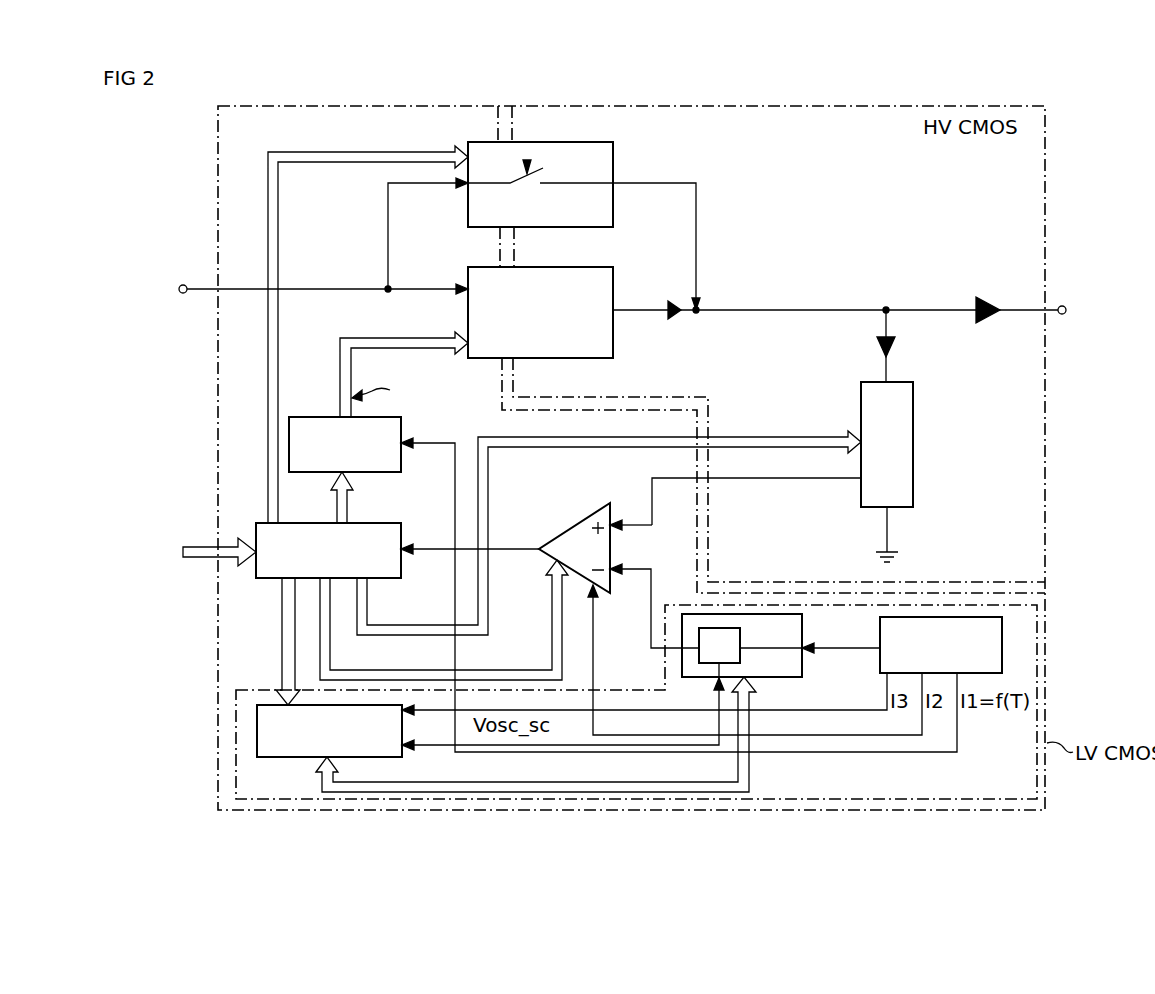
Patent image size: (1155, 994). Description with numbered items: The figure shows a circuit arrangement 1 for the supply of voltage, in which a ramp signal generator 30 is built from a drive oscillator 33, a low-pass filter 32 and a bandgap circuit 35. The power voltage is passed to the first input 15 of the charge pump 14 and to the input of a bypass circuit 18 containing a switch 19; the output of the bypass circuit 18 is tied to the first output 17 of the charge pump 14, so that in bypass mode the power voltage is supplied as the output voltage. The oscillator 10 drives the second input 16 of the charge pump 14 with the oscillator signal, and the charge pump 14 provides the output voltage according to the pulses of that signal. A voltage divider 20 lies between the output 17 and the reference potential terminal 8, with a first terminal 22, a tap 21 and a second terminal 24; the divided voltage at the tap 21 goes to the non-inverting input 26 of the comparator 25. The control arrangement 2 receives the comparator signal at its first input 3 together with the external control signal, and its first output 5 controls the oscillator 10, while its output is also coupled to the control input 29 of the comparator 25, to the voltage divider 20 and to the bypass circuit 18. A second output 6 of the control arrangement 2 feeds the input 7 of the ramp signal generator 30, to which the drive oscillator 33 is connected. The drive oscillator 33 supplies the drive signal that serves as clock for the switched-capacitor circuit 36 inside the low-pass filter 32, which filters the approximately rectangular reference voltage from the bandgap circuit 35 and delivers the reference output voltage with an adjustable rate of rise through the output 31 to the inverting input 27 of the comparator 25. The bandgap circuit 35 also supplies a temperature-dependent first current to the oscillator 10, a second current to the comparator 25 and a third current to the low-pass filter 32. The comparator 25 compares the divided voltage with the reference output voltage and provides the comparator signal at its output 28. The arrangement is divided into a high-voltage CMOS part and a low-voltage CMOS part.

The circuit arrangement 1 is at (218, 93).
The control arrangement 2 is at (385, 523).
The first input of the control arrangement 3 is at (401, 553).
The first output of the control arrangement 5 is at (349, 516).
The second output of the control arrangement 6 is at (266, 580).
The input of the ramp signal generator 7 is at (282, 692).
The reference potential terminal 8 is at (898, 553).
The oscillator 10 is at (310, 417).
The charge pump 14 is at (613, 292).
The first input of the charge pump 15 is at (468, 289).
The second input of the charge pump 16 is at (468, 350).
The first output of the charge pump 17 is at (613, 310).
The bypass circuit 18 is at (613, 165).
The switch 19 is at (523, 178).
The voltage divider 20 is at (913, 445).
The tap 21 is at (858, 478).
The first terminal 22 is at (887, 380).
The second terminal 24 is at (887, 510).
The comparator 25 is at (588, 518).
The non-inverting input 26 is at (612, 520).
The inverting input 27 is at (612, 574).
The output of the comparator 28 is at (539, 548).
The control input of the comparator 29 is at (557, 572).
The ramp signal generator 30 is at (568, 690).
The output of the ramp signal generator 31 is at (665, 648).
The low-pass filter 32 is at (802, 677).
The drive oscillator 33 is at (402, 752).
The bandgap circuit 35 is at (880, 655).
The switched-capacitor circuit 36 is at (740, 640).